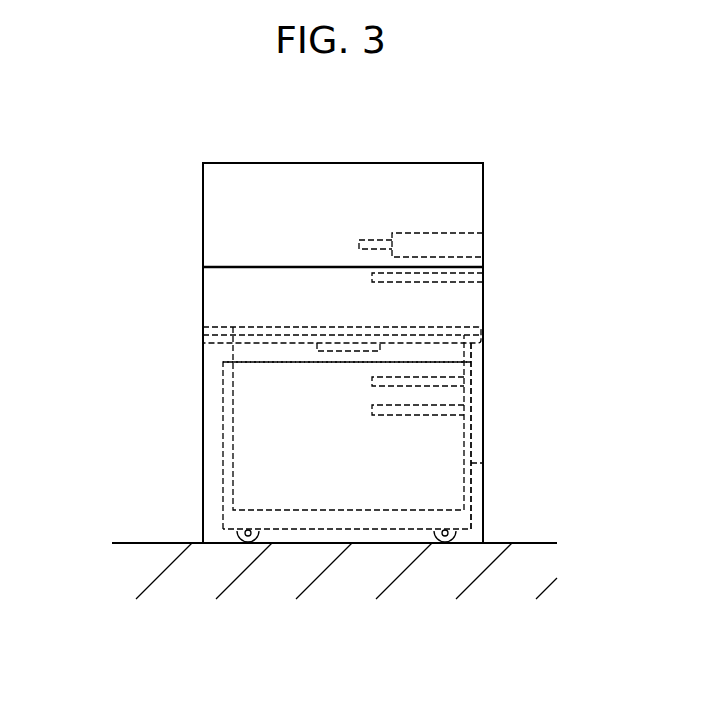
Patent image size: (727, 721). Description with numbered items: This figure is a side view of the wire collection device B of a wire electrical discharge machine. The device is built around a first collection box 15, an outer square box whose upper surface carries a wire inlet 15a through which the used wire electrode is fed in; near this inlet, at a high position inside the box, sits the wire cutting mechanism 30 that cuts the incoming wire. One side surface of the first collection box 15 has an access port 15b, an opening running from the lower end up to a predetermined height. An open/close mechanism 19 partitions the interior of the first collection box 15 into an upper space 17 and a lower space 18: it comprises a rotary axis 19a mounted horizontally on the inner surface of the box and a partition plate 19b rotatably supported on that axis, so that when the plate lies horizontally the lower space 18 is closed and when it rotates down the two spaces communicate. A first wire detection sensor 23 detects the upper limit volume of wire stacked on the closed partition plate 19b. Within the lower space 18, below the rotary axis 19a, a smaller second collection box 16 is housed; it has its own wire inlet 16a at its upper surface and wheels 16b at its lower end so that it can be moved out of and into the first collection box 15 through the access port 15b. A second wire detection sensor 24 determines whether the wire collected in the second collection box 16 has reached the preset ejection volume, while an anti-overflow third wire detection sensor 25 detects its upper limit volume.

The wire collection device B is at (553, 150).
The first collection box 15 is at (203, 217).
The wire inlet 15a is at (348, 163).
The access port 15b is at (203, 446).
The upper space 17 is at (222, 277).
The wire cutting mechanism 30 is at (422, 233).
The first wire detection sensor 23 is at (384, 282).
The open/close mechanism 19 is at (462, 327).
The rotary axis 19a is at (322, 327).
The partition plate 19b is at (472, 463).
The second collection box 16 is at (223, 393).
The wire inlet 16a is at (272, 362).
The wheels 16b is at (246, 546).
The lower space 18 is at (260, 475).
The third wire detection sensor 25 is at (372, 381).
The second wire detection sensor 24 is at (386, 417).